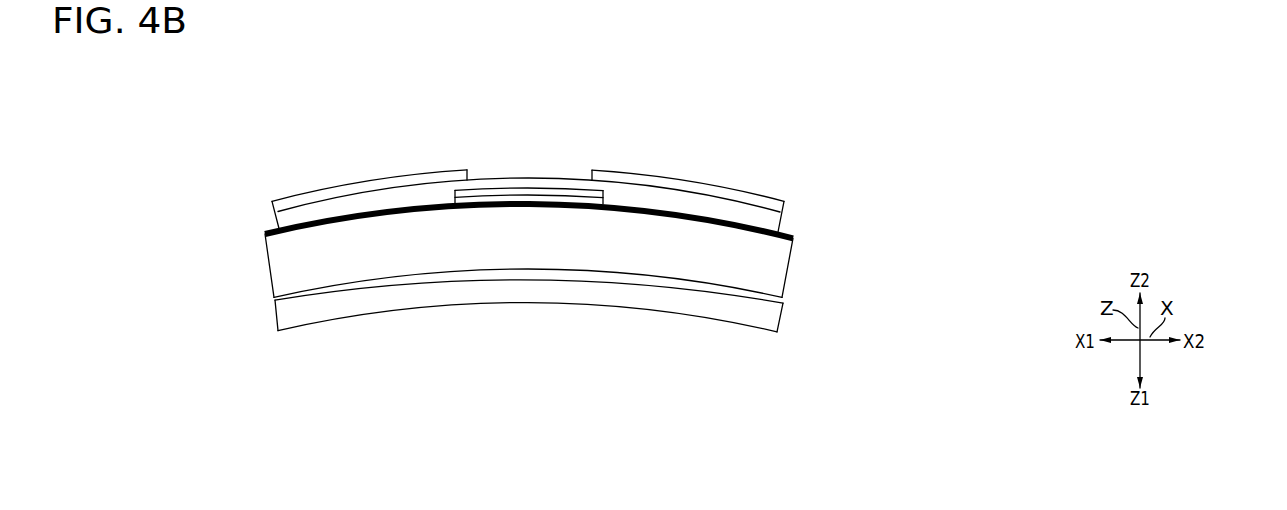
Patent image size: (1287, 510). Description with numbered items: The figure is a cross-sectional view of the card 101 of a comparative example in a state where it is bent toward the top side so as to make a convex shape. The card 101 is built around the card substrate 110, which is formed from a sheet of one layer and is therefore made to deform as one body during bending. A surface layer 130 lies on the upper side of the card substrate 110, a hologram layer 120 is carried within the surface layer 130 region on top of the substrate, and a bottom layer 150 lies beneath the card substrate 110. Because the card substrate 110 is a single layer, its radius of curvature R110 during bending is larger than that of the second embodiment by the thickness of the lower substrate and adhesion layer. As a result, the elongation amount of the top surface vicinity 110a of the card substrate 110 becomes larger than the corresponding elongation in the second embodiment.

The card 101 is at (380, 128).
The hologram layer 120 is at (503, 174).
The surface layer 130 is at (772, 219).
The card substrate 110 is at (772, 266).
The top surface vicinity 110a is at (305, 234).
The bottom layer 150 is at (773, 325).
The radius of curvature R110 is at (405, 213).